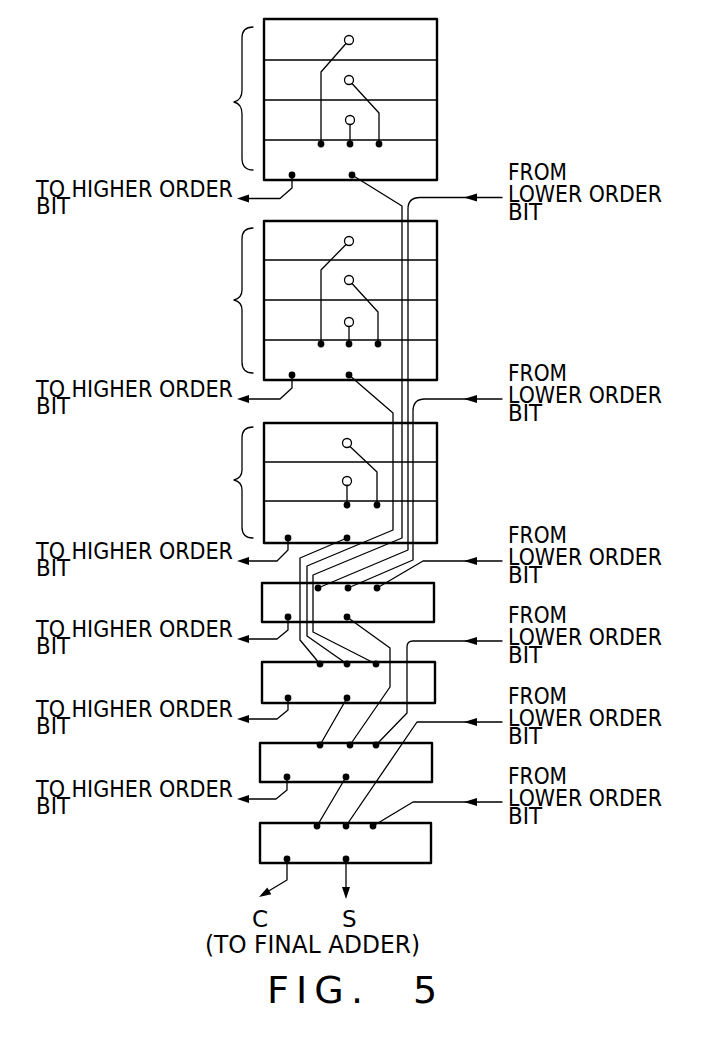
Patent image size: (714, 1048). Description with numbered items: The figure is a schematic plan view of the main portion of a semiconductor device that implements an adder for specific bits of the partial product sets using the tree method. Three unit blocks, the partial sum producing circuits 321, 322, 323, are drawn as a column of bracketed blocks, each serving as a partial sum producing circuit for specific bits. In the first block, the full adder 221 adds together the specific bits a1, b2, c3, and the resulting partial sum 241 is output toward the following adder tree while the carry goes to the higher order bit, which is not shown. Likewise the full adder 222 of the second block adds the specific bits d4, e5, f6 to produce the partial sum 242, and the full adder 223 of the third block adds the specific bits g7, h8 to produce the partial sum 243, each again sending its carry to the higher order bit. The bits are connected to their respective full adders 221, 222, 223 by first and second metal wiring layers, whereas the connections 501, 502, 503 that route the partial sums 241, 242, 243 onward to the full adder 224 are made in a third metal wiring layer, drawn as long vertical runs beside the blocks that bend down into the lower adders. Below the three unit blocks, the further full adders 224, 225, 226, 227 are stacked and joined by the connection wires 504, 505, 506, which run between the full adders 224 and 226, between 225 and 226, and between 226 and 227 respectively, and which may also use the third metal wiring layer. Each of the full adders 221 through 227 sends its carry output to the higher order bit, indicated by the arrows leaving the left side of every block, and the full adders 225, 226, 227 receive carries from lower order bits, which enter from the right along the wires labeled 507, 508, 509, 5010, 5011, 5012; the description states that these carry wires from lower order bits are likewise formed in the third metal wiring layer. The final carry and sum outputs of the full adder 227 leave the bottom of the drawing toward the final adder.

The full adder 221 is at (437, 160).
The full adder 222 is at (432, 356).
The full adder 223 is at (428, 517).
The full adder 224 is at (264, 682).
The full adder 225 is at (263, 608).
The full adder 226 is at (261, 759).
The full adder 227 is at (259, 843).
The partial sum 241 is at (350, 181).
The partial sum 242 is at (345, 370).
The partial sum 243 is at (347, 535).
The partial sum producing circuit 321 is at (227, 98).
The partial sum producing circuit 322 is at (223, 300).
The partial sum producing circuit 323 is at (225, 482).
The connection 501 is at (377, 186).
The connection 502 is at (379, 404).
The connection 503 is at (298, 573).
The connection wire 504 is at (382, 642).
The connection wire 505 is at (333, 721).
The connection wire 506 is at (327, 806).
The signal line from lower order bit 507 is at (453, 199).
The signal line from lower order bit 508 is at (453, 400).
The signal line from lower order bit 509 is at (453, 562).
The signal line from lower order bit 5010 is at (453, 642).
The signal line from lower order bit 5011 is at (453, 723).
The signal line from lower order bit 5012 is at (453, 803).
The specific bit a1 is at (359, 82).
The specific bit b2 is at (371, 104).
The specific bit c3 is at (354, 119).
The specific bit d4 is at (358, 284).
The specific bit e5 is at (369, 302).
The specific bit f6 is at (345, 322).
The specific bit g7 is at (367, 465).
The specific bit h8 is at (327, 484).